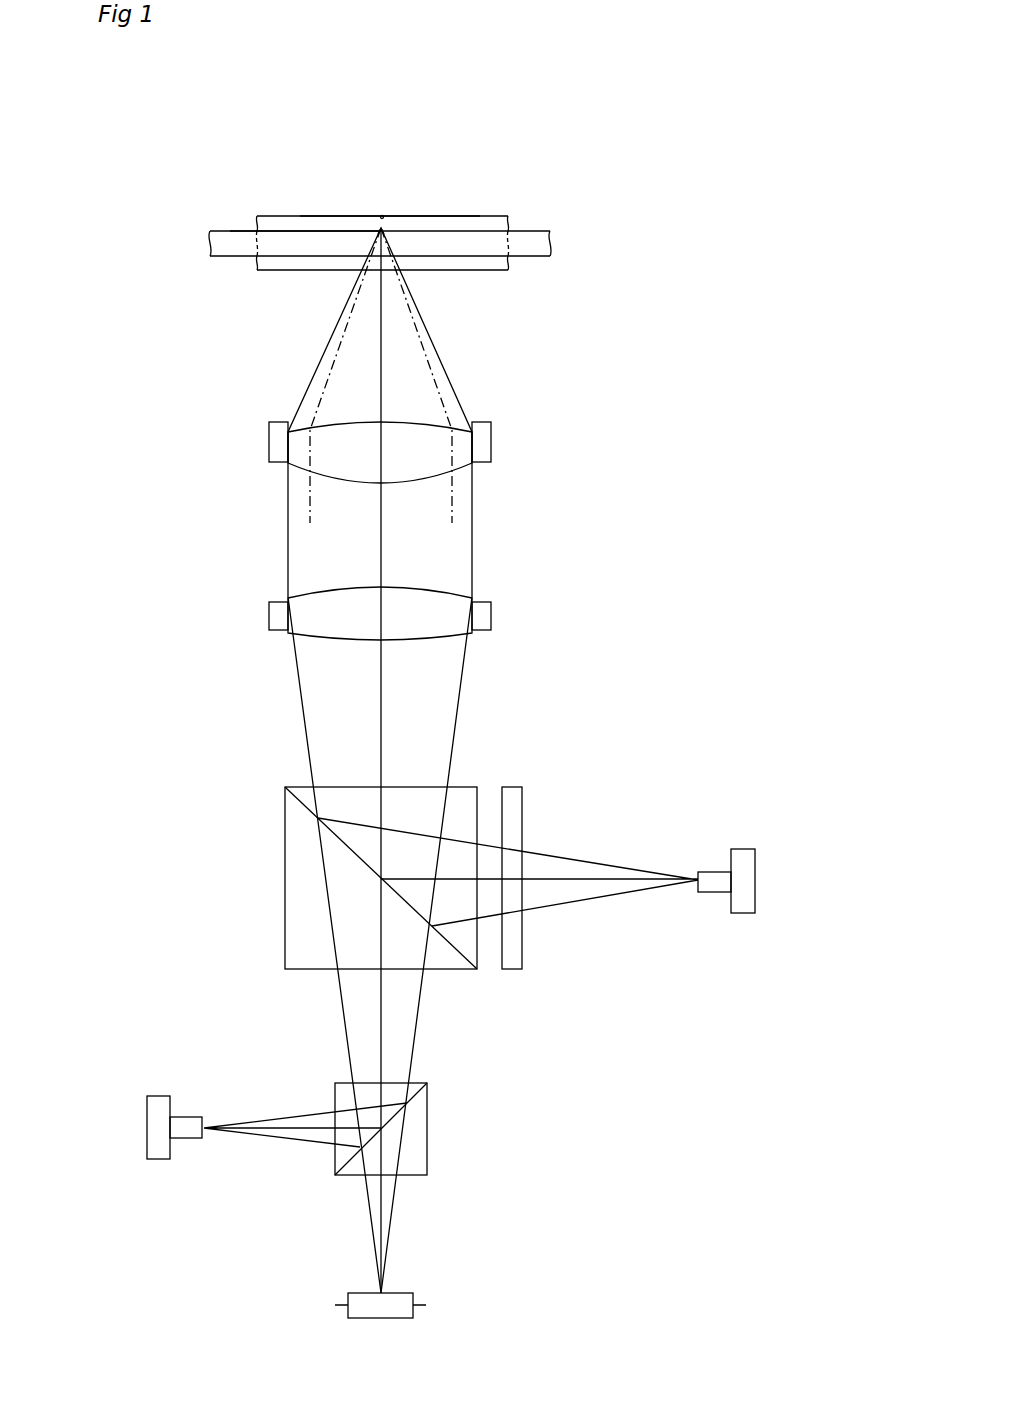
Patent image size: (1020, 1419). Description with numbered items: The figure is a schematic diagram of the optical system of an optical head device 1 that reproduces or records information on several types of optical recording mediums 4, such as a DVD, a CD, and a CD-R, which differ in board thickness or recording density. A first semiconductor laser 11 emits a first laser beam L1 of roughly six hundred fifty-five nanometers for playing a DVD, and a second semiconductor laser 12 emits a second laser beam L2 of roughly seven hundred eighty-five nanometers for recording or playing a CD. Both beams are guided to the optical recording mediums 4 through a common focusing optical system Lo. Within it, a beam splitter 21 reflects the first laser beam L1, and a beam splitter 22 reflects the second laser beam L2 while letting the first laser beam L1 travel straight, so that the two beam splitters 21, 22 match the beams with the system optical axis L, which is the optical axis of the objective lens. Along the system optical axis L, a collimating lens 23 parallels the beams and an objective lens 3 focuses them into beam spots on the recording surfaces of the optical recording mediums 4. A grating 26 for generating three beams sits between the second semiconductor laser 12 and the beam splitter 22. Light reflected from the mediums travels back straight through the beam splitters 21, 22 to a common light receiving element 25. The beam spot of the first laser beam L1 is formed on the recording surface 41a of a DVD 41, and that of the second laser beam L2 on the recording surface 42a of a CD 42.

The optical head device 1 is at (175, 483).
The objective lens 3 is at (490, 438).
The optical recording medium 4 is at (823, 172).
The first semiconductor laser 11 is at (147, 1137).
The second semiconductor laser 12 is at (745, 849).
The beam splitter 21 is at (428, 1105).
The beam splitter 22 is at (476, 787).
The collimating lens 23 is at (488, 620).
The light receiving element 25 is at (413, 1298).
The grating 26 is at (522, 950).
The DVD 41 is at (527, 258).
The recording surface 41a is at (287, 229).
The CD 42 is at (508, 216).
The recording surface 42a is at (407, 215).
The system optical axis L is at (377, 708).
The first laser beam L1 is at (310, 1115).
The second laser beam L2 is at (555, 878).
The focusing optical system Lo is at (826, 292).